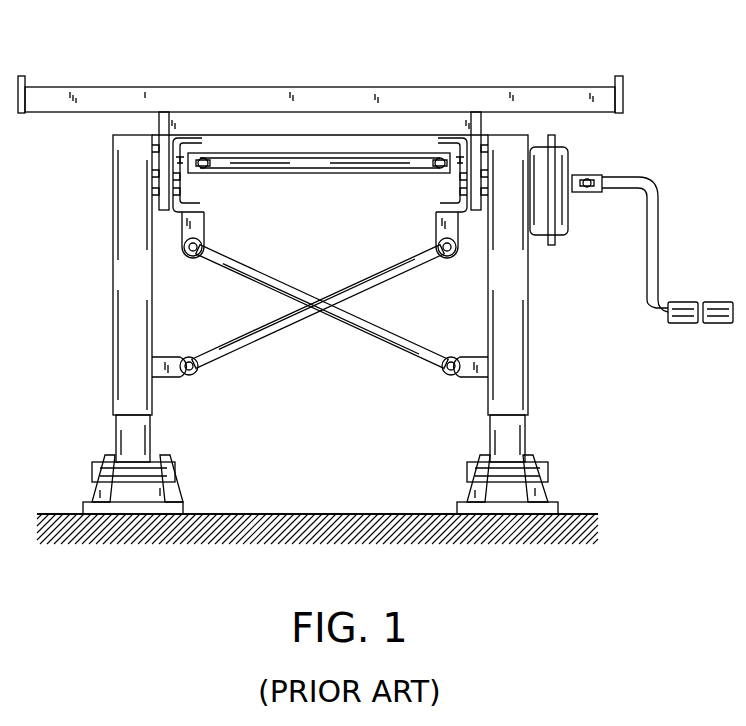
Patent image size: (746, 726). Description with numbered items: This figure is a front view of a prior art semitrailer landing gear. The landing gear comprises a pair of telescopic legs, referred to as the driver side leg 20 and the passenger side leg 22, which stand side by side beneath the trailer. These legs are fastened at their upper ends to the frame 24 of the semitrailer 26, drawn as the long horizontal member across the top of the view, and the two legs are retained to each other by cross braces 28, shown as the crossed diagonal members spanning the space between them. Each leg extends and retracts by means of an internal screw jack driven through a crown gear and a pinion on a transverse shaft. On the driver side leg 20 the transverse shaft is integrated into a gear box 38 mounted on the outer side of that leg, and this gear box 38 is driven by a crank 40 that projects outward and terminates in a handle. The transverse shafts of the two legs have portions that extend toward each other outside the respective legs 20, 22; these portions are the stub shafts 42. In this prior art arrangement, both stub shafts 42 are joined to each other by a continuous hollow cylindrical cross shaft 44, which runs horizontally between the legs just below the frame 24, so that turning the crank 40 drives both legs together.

The driver side leg 20 is at (528, 345).
The passenger side leg 22 is at (112, 331).
The frame 24 is at (200, 198).
The semitrailer 26 is at (623, 97).
The cross braces 28 is at (350, 330).
The gear box 38 is at (563, 237).
The crank 40 is at (660, 238).
The stub shafts 42 is at (181, 156).
The cross shaft 44 is at (330, 173).